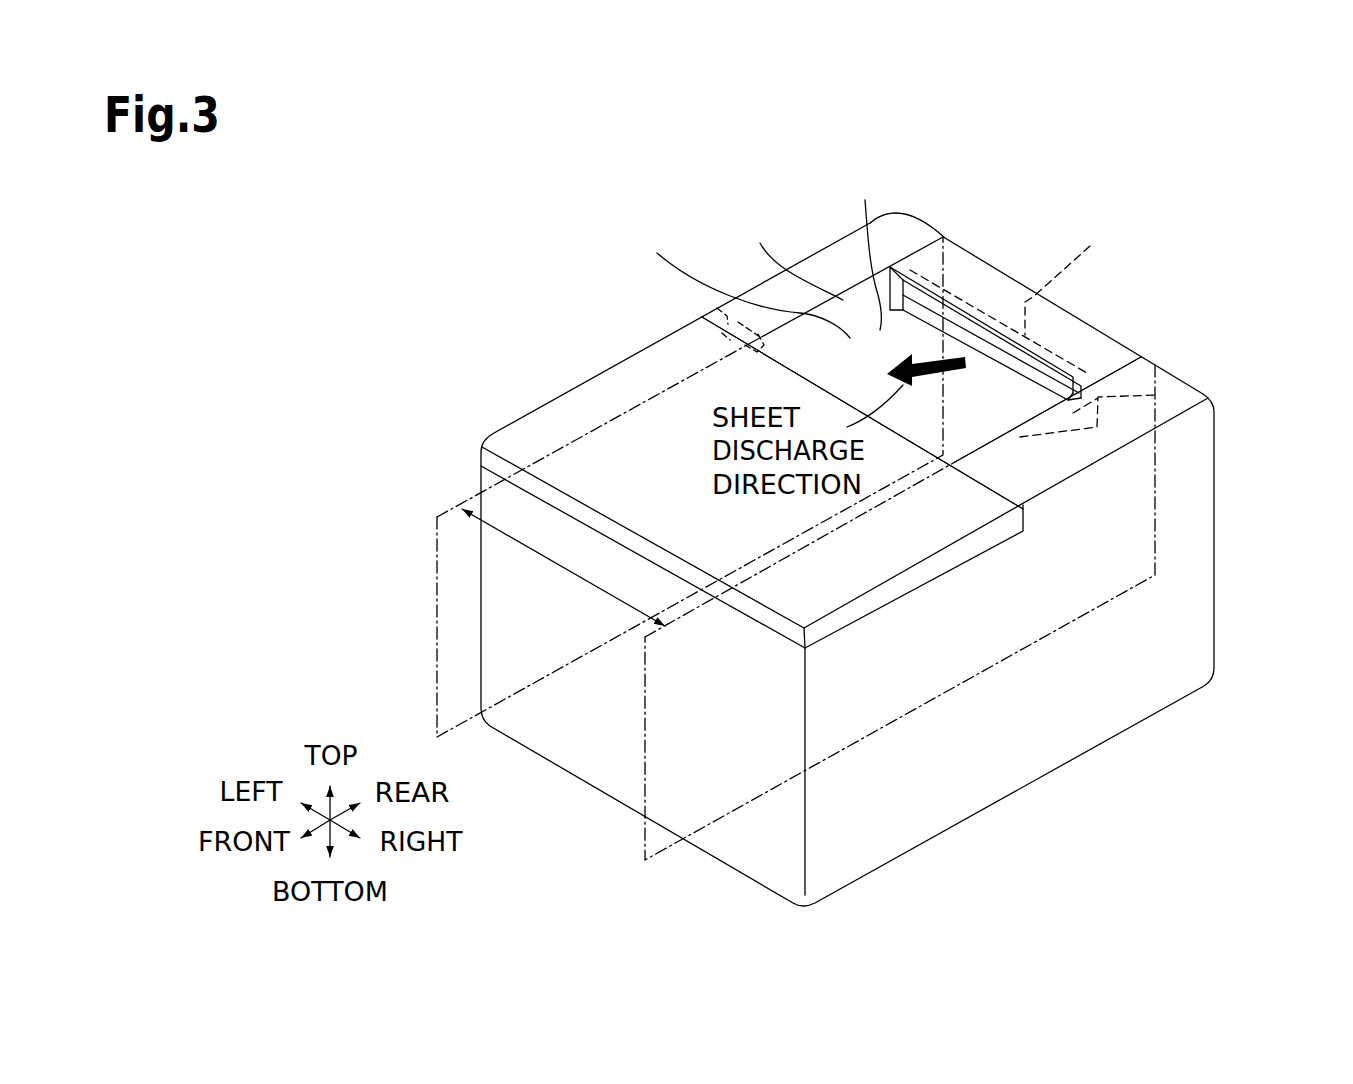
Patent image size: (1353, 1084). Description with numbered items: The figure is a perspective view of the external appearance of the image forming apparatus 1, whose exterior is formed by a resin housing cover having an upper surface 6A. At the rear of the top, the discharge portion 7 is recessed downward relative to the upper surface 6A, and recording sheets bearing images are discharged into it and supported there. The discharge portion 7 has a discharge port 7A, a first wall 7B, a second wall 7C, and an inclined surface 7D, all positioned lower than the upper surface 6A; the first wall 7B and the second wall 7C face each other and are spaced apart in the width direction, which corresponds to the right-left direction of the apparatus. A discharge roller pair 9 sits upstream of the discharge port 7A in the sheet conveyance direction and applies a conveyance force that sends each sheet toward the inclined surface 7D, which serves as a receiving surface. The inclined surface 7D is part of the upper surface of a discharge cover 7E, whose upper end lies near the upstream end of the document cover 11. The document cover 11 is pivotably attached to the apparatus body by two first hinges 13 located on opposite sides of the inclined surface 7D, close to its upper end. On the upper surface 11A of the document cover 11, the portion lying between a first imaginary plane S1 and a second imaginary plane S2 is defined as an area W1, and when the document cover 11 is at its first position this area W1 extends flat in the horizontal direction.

The image forming apparatus 1 is at (707, 250).
The discharge portion 7 is at (860, 300).
The discharge port 7A is at (962, 350).
The first wall 7B is at (792, 254).
The second wall 7C is at (1160, 394).
The inclined surface 7D is at (739, 284).
The discharge cover 7E is at (866, 251).
The upper surface 6A is at (912, 247).
The discharge roller 9 is at (1080, 390).
The first hinge 13 is at (710, 302).
The document cover 11 is at (481, 452).
The upper surface of the document cover 11A is at (668, 485).
The first imaginary plane S1 is at (443, 513).
The second imaginary plane S2 is at (653, 640).
The area W1 is at (563, 567).